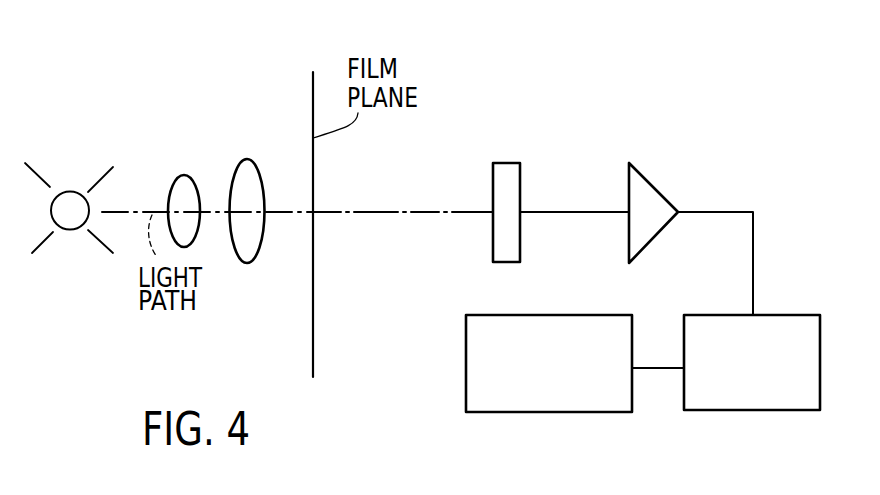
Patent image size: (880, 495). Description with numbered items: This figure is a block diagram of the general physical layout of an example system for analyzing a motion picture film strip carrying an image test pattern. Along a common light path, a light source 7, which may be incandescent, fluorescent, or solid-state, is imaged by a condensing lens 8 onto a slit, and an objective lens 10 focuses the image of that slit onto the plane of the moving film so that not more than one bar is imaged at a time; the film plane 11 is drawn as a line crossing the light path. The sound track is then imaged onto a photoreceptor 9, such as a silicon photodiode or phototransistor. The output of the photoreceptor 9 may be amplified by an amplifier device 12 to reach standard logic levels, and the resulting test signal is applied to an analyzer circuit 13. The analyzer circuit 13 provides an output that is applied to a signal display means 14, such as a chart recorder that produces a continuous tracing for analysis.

The light source 7 is at (70, 192).
The condensing lens 8 is at (183, 176).
The photoreceptor 9 is at (510, 188).
The objective lens 10 is at (247, 158).
The film plane 11 is at (314, 348).
The amplifier device 12 is at (653, 195).
The analyzer circuit 13 is at (770, 397).
The signal display means 14 is at (595, 397).